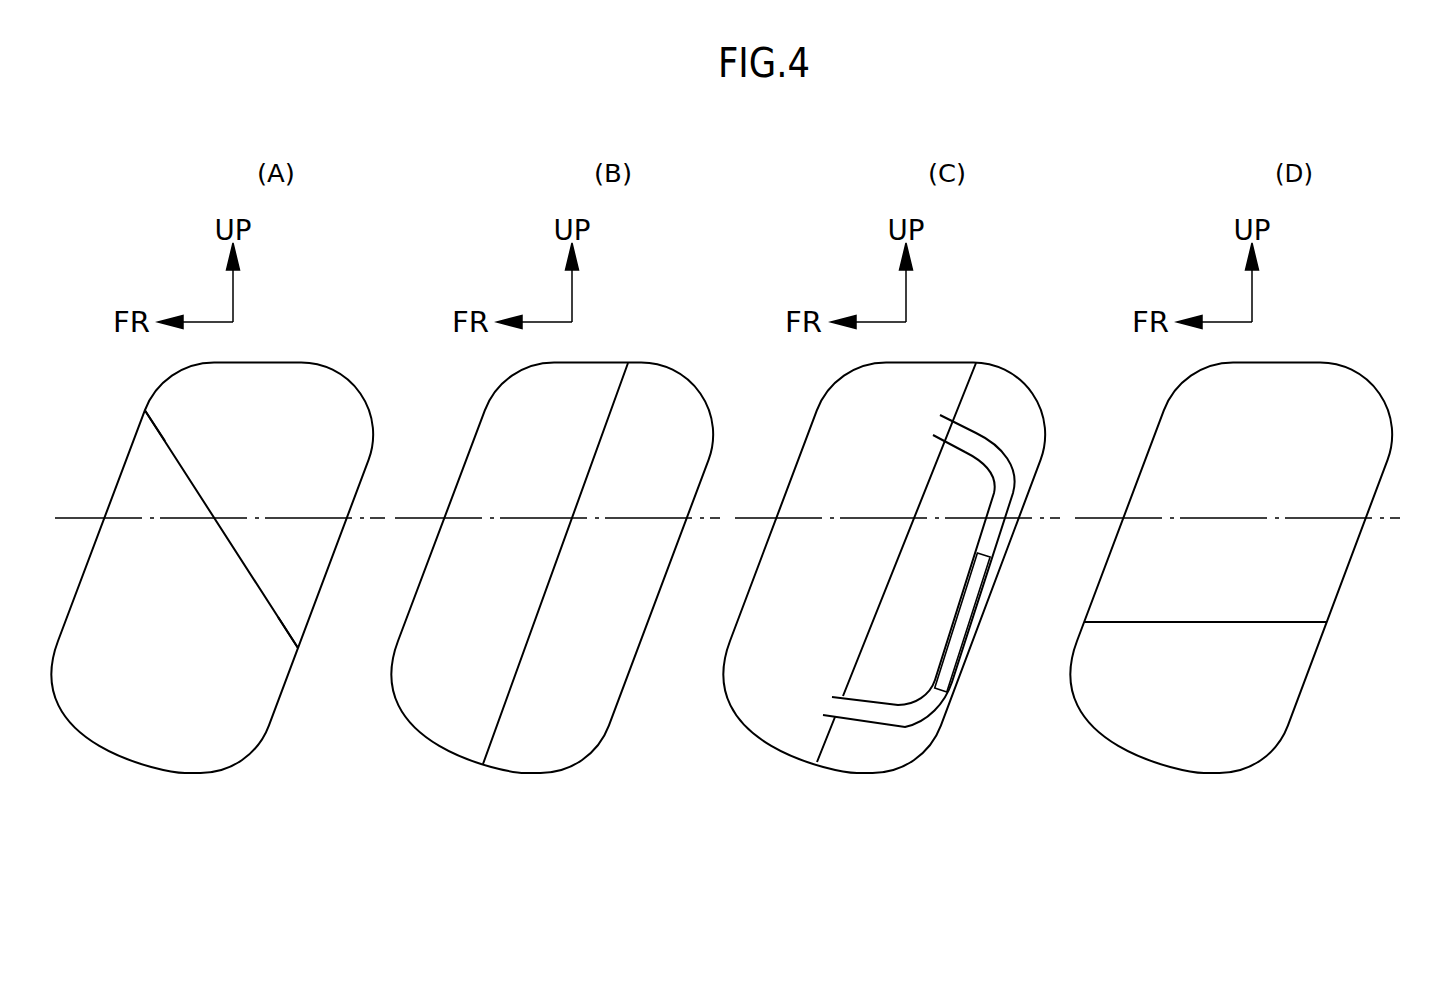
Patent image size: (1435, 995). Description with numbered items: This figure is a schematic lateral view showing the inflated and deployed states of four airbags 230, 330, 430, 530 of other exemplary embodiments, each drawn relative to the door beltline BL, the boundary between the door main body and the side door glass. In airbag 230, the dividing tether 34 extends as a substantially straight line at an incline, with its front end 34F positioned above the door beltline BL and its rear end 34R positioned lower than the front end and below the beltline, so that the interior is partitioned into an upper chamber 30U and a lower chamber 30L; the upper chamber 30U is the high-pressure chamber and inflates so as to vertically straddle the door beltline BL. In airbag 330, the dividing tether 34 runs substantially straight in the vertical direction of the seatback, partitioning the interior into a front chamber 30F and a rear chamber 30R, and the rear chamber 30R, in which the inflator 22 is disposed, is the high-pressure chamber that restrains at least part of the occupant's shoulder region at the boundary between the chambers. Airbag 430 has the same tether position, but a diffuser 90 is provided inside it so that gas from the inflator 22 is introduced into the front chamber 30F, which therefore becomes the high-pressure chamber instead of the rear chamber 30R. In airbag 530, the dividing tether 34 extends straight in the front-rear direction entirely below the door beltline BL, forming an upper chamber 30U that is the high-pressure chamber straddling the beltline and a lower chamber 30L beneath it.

The airbag 230 is at (338, 374).
The airbag 330 is at (678, 374).
The airbag 430 is at (1010, 374).
The airbag 530 is at (1357, 374).
The dividing tether 34 is at (736, 563).
The front end of dividing tether 34F is at (146, 411).
The rear end of dividing tether 34R is at (297, 649).
The upper chamber 30U is at (771, 452).
The lower chamber 30L is at (666, 664).
The front chamber 30F is at (666, 578).
The rear chamber 30R is at (756, 578).
The diffuser 90 is at (948, 548).
The inflator 22 is at (956, 645).
The door beltline BL is at (727, 481).